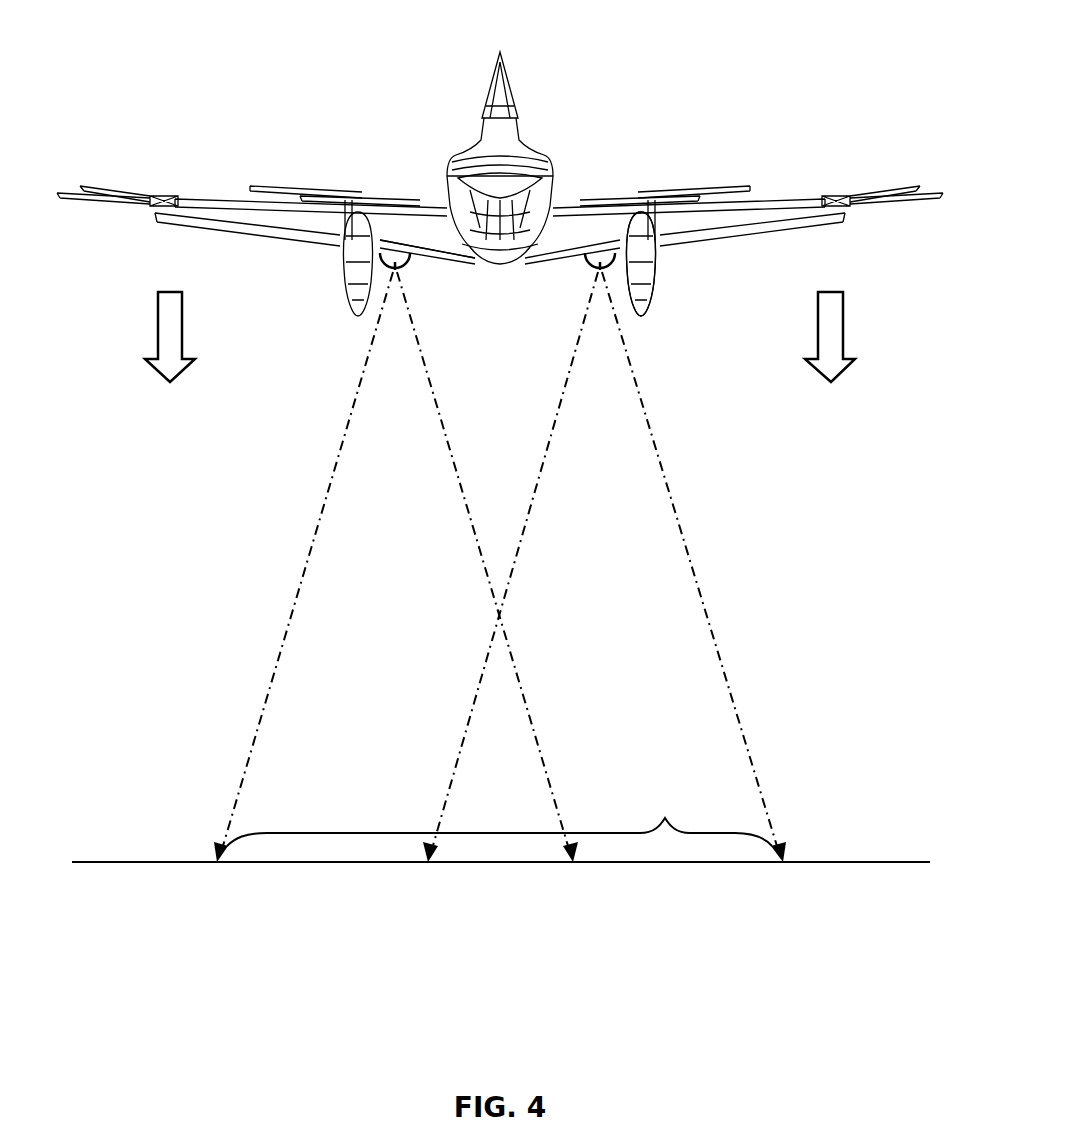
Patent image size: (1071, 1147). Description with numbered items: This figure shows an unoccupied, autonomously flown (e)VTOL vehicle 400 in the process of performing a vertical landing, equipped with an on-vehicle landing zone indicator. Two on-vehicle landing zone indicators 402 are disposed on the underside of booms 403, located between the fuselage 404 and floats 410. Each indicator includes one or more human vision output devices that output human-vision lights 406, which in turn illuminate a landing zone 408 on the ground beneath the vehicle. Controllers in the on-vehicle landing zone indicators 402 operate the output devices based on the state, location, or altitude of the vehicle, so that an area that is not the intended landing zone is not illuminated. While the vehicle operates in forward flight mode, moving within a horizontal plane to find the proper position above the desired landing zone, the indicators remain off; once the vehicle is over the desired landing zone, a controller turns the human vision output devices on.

The (e)VTOL vehicle 400 is at (500, 52).
The on-vehicle landing zone indicator 402 is at (586, 262).
The boom 403 is at (440, 261).
The fuselage 404 is at (553, 166).
The human-vision light 406 is at (704, 570).
The landing zone 408 is at (499, 807).
The float 410 is at (655, 270).